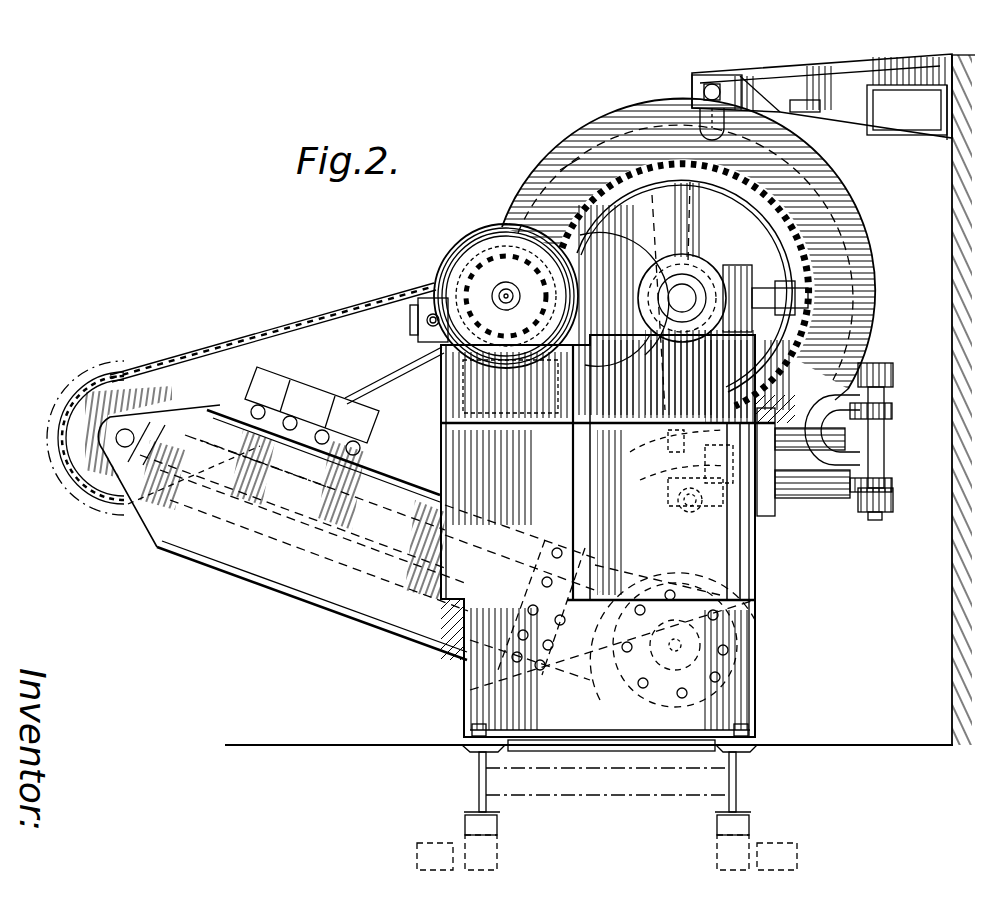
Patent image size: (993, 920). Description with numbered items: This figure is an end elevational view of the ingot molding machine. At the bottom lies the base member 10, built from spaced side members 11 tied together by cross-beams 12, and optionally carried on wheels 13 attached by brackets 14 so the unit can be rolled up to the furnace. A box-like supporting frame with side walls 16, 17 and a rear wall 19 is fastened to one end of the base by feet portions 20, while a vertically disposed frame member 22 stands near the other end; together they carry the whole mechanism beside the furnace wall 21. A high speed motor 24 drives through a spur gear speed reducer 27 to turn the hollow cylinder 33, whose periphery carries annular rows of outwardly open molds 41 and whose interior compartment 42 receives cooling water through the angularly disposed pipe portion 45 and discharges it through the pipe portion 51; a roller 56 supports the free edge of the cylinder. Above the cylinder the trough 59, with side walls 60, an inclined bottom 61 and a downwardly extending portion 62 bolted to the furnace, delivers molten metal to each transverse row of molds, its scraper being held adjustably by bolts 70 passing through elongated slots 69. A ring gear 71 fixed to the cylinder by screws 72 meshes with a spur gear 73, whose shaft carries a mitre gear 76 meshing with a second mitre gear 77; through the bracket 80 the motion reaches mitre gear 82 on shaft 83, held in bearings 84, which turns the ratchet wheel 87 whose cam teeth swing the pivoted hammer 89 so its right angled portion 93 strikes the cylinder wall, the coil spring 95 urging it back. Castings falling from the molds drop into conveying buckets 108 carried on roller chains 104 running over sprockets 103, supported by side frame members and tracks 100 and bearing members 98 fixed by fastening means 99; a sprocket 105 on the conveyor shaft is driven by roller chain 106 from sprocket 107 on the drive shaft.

The base member 10 is at (609, 755).
The side members 11 is at (479, 772).
The cross-beams 12 is at (590, 798).
The wheels 13 is at (417, 860).
The brackets 14 is at (497, 846).
The side wall 16 is at (620, 518).
The side wall 17 is at (430, 588).
The rear wall 19 is at (755, 592).
The feet portions 20 is at (462, 737).
The furnace wall 21 is at (953, 680).
The frame member 22 is at (540, 510).
The high speed motor 24 is at (440, 350).
The spur gear speed reducer 27 is at (440, 262).
The cylinder 33 is at (592, 124).
The molds 41 is at (610, 108).
The compartment 42 is at (548, 165).
The angularly disposed pipe portion 45 is at (690, 215).
The angularly disposed pipe portion 51 is at (715, 372).
The roller 56 is at (720, 500).
The trough 59 is at (812, 108).
The side walls 60 is at (778, 70).
The bottom 61 is at (835, 95).
The downwardly extending portion 62 is at (945, 136).
The elongated slots 69 is at (700, 92).
The bolts 70 is at (700, 80).
The ring gear 71 is at (700, 262).
The screws 72 is at (770, 180).
The spur gear 73 is at (762, 400).
The mitre gear 76 is at (668, 440).
The second mitre gear 77 is at (810, 428).
The bracket 80 is at (840, 395).
The mitre gear 82 is at (892, 412).
The shaft 83 is at (882, 440).
The bearings 84 is at (893, 375).
The ratchet wheel 87 is at (892, 483).
The hammer 89 is at (808, 495).
The right angled inwardly extending portion 93 is at (705, 452).
The coil spring 95 is at (680, 498).
The members 98 is at (735, 640).
The fastening means 99 is at (712, 690).
The side frame members and tracks 100 is at (255, 578).
The sprockets 103 is at (56, 425).
The roller chains 104 is at (398, 465).
The sprocket 105 is at (95, 478).
The roller chain 106 is at (338, 312).
The sprocket 107 is at (452, 240).
The conveying buckets 108 is at (305, 392).